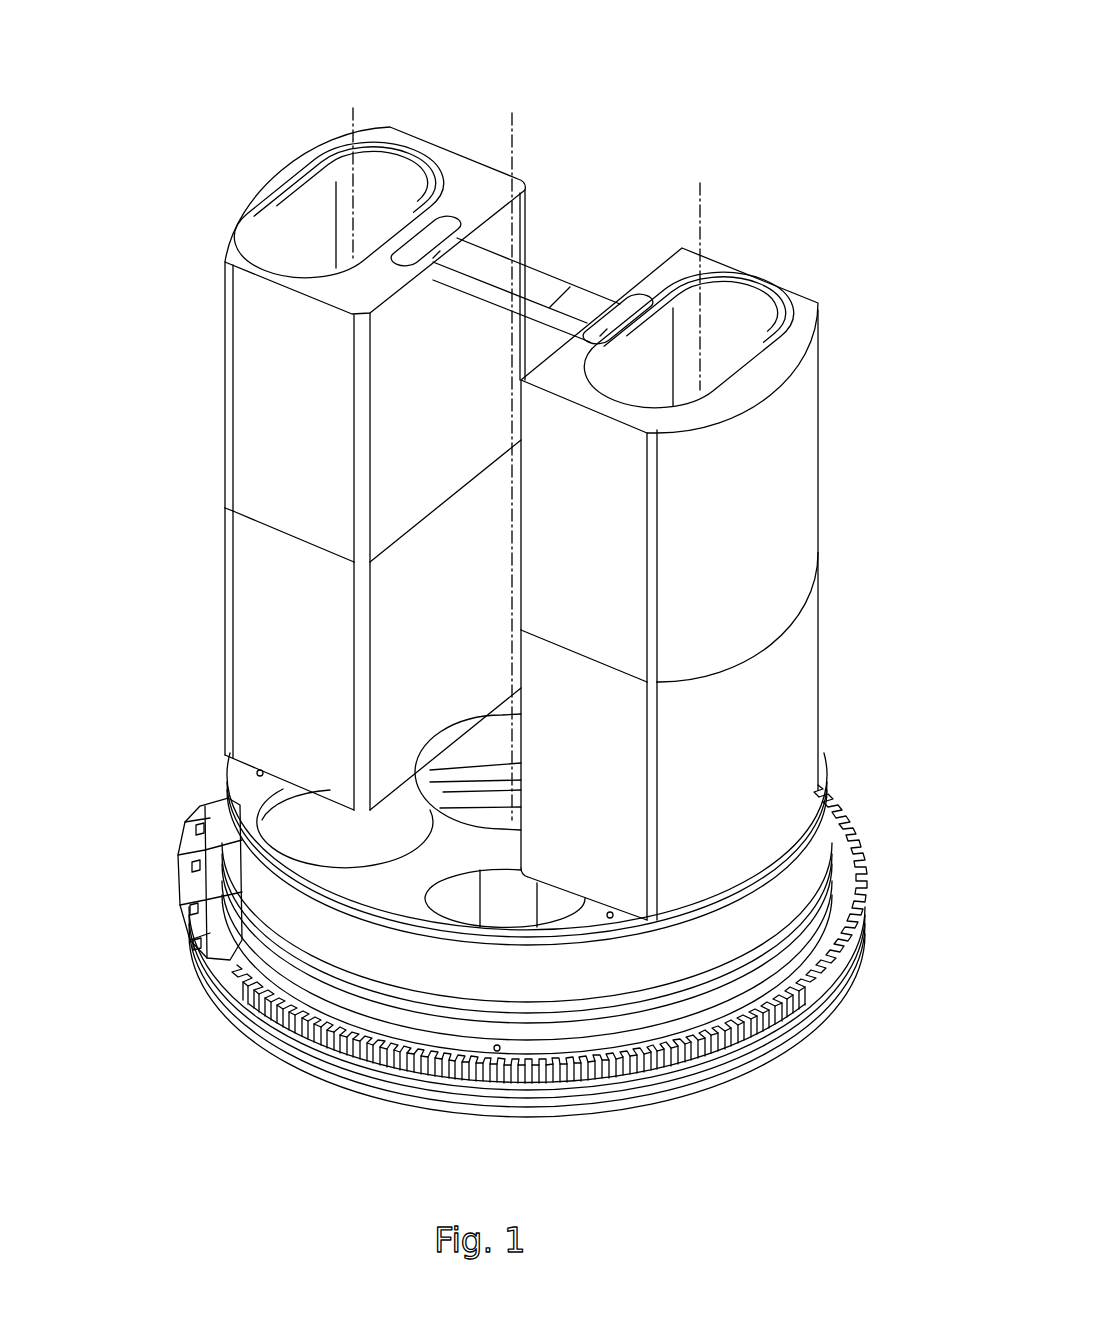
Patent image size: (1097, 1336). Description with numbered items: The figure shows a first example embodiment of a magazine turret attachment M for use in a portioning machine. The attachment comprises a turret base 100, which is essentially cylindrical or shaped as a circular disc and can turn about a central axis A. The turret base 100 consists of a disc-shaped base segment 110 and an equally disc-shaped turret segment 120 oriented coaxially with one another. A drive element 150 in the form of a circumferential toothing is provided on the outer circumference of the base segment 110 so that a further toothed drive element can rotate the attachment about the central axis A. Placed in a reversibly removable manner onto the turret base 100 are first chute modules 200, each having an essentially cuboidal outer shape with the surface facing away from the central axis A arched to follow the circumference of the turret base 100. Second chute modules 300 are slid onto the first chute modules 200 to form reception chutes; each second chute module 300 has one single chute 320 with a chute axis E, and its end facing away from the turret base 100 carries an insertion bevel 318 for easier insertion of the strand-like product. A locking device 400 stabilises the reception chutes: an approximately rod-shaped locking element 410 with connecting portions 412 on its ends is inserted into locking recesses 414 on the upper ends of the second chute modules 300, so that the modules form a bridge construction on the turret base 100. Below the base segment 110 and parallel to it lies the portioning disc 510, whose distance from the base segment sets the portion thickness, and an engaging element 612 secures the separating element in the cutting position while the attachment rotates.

The magazine turret attachment M is at (129, 121).
The locking device 400 is at (726, 88).
The turret base 100 is at (130, 848).
The base segment 110 is at (250, 957).
The turret segment 120 is at (233, 838).
The drive element 150 is at (853, 833).
The first chute module 200 is at (262, 630).
The second chute module 300 is at (262, 432).
The insertion bevel 318 is at (338, 187).
The chute 320 is at (293, 246).
The locking element 410 is at (503, 286).
The connecting portions 412 is at (428, 237).
The locking recess 414 is at (418, 257).
The portioning disc 510 is at (393, 1083).
The engaging element 612 is at (207, 895).
The central axis A is at (513, 140).
The chute axis E is at (360, 257).